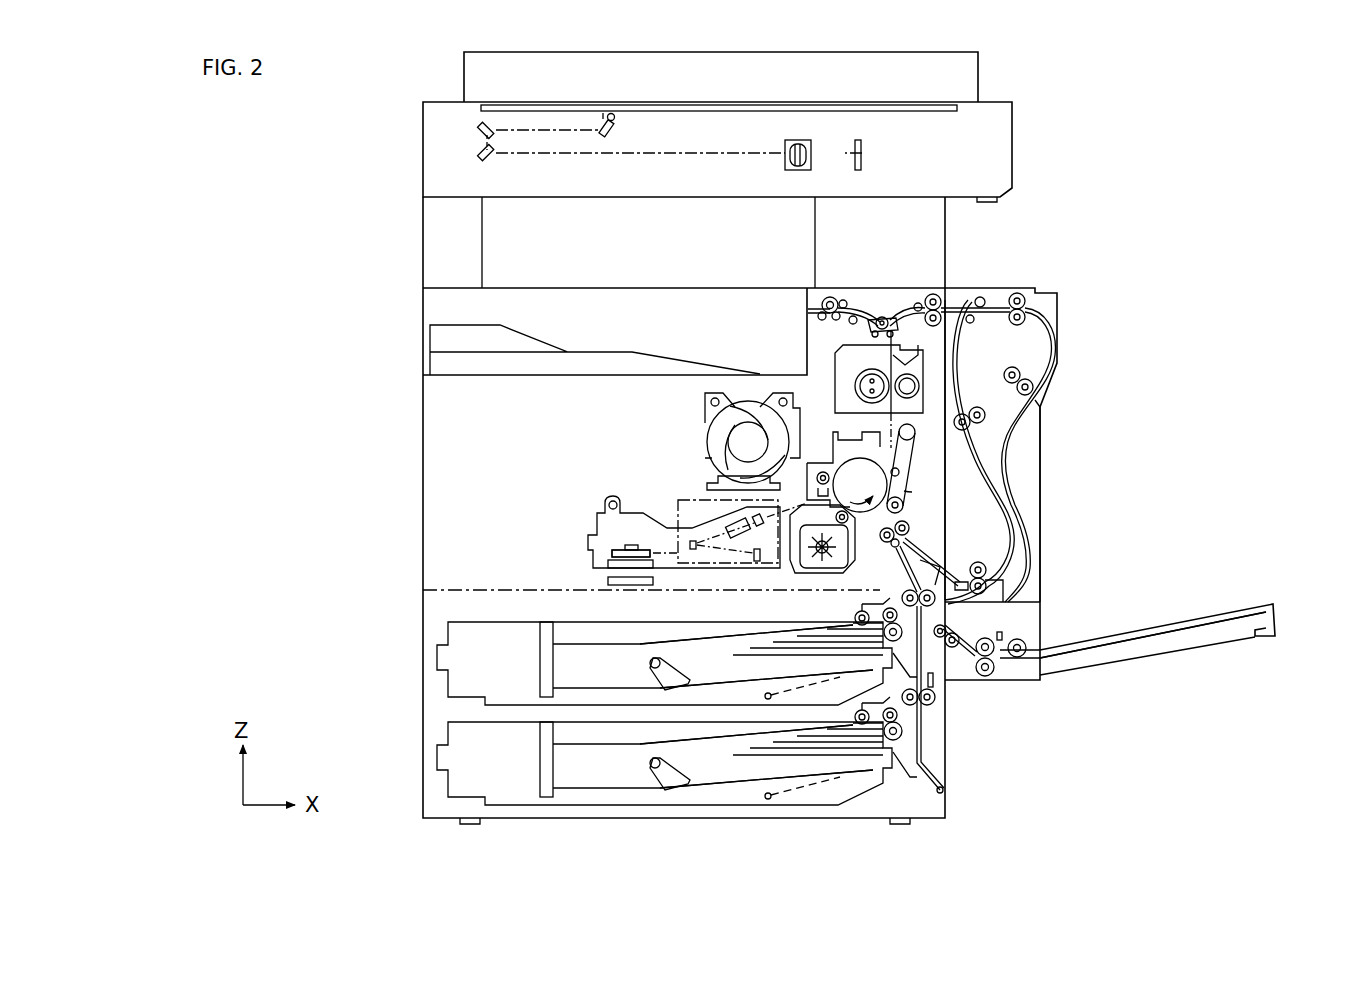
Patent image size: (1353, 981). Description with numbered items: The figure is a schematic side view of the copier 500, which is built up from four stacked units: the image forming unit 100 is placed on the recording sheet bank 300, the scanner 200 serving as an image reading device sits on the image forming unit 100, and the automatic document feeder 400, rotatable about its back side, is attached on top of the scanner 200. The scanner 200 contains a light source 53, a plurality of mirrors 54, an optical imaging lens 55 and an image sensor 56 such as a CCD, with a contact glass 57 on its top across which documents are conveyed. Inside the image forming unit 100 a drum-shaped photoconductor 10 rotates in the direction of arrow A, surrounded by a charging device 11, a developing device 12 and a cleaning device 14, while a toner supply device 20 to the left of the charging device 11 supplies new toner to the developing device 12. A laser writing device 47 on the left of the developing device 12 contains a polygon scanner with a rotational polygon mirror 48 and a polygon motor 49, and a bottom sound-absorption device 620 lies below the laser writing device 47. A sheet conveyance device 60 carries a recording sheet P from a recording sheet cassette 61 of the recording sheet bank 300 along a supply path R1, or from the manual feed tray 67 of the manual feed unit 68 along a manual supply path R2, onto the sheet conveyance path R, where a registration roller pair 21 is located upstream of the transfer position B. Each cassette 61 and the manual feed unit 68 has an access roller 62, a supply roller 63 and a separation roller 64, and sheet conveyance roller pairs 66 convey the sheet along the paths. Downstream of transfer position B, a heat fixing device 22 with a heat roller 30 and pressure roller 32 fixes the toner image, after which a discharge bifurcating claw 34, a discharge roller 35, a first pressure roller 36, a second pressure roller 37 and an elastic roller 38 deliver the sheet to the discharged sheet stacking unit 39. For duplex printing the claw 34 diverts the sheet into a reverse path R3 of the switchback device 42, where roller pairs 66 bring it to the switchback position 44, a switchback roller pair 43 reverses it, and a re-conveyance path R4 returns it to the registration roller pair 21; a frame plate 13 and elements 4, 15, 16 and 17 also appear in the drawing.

The copier 500 is at (1094, 68).
The automatic document feeder 400 is at (438, 75).
The scanner 200 is at (418, 190).
The image forming unit 100 is at (418, 427).
The recording sheet bank 300 is at (418, 738).
The contact glass 57 is at (900, 104).
The light source 53 is at (614, 114).
The mirrors 54 is at (478, 154).
The optical imaging lens 55 is at (784, 148).
The image sensor 56 is at (864, 153).
The discharged sheet stacking unit 39 is at (650, 352).
The sheet conveyance device 60 is at (904, 277).
The discharge roller 35 is at (830, 296).
The first pressure roller 36 is at (850, 300).
The second pressure roller 37 is at (808, 313).
The elastic roller 38 is at (806, 300).
The discharge bifurcating claw 34 is at (868, 330).
The sheet conveyance path R is at (870, 300).
The supply path R1 is at (922, 700).
The manual supply path R2 is at (975, 645).
The reverse path R3 is at (1054, 340).
The re-conveyance path R4 is at (1015, 545).
The sheet conveyance roller pairs 66 is at (936, 296).
The switchback roller pair 43 is at (1032, 393).
The switchback position 44 is at (1007, 426).
The switchback device 42 is at (1050, 480).
The frame plate 13 is at (946, 478).
The heat fixing device 22 is at (830, 370).
The heat roller 30 is at (858, 378).
The pressure roller 32 is at (912, 373).
The toner supply device 20 is at (707, 442).
The laser writing device 47 is at (604, 497).
The optical scanning device 4 is at (634, 545).
The rotational polygon mirror 48 is at (622, 548).
The polygon motor 49 is at (612, 553).
The bottom sound-absorption device 620 is at (608, 582).
The cleaning device 14 is at (834, 432).
The photoconductor 10 is at (840, 468).
The rotation direction arrow A is at (860, 491).
The charging device 11 is at (815, 478).
The transfer belt 17 is at (908, 452).
The belt roller 15 is at (914, 432).
The transfer roller 16 is at (903, 510).
The transfer position B is at (916, 489).
The registration roller pair 21 is at (910, 532).
The developing device 12 is at (800, 576).
The recording sheet cassette 61 is at (437, 682).
The recording sheet P is at (735, 660).
The access roller 62 is at (855, 615).
The supply roller 63 is at (903, 598).
The separation roller 64 is at (986, 677).
The manual feed unit 68 is at (1178, 606).
The manual feed tray 67 is at (1200, 648).